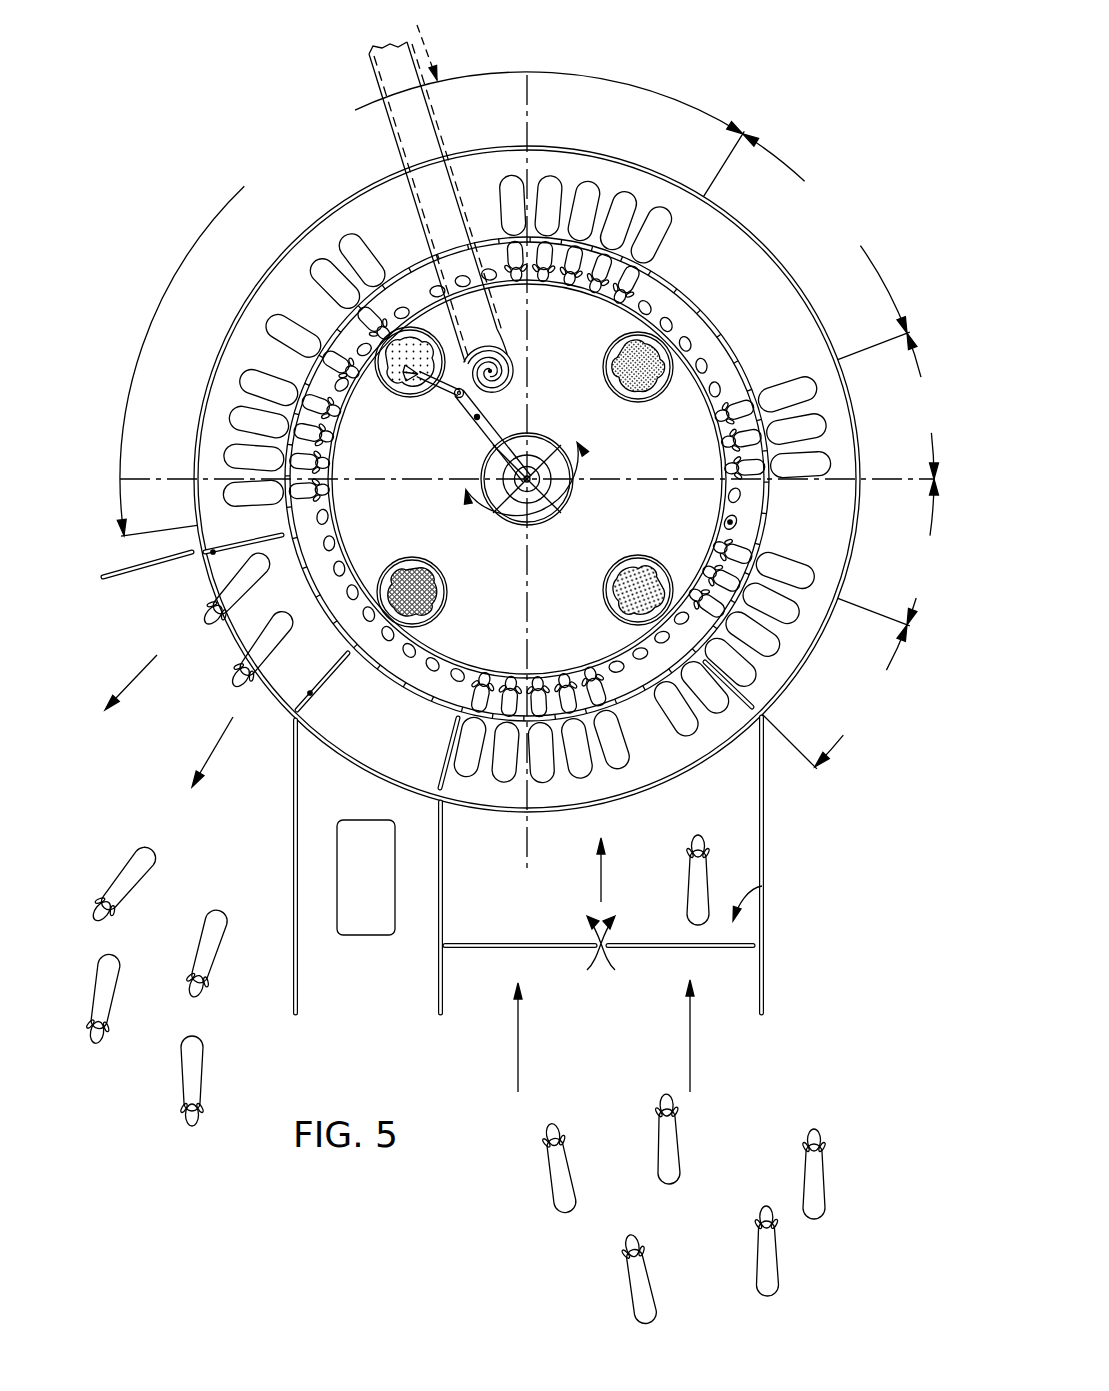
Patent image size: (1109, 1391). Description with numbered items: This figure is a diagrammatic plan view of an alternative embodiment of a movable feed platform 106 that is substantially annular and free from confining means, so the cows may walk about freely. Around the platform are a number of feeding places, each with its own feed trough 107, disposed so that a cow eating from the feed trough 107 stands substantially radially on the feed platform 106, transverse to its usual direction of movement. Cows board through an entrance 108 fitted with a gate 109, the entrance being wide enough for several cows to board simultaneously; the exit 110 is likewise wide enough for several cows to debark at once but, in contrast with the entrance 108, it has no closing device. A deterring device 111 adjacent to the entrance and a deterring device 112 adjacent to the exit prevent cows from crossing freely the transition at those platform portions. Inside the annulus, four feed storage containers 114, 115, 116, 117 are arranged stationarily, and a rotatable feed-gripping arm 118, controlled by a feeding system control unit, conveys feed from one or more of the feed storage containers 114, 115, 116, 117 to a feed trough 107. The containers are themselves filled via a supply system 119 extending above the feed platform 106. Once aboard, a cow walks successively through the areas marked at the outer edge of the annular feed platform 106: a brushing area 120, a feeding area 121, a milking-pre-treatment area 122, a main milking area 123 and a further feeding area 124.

The feed platform 106 is at (548, 155).
The feed trough 107 is at (723, 522).
The entrance 108 is at (762, 886).
The gate 109 is at (724, 948).
The exit 110 is at (192, 752).
The deterring device 111 is at (443, 790).
The deterring device 112 is at (213, 552).
The feed storage container 114 is at (445, 592).
The feed storage container 115 is at (608, 604).
The feed storage container 116 is at (667, 387).
The feed storage container 117 is at (408, 398).
The feed-gripping arm 118 is at (477, 417).
The supply system 119 is at (374, 70).
The brushing area 120 is at (835, 697).
The feeding area 121 is at (898, 552).
The milking-pre-treatment area 122 is at (929, 406).
The main milking area 123 is at (826, 247).
The feeding area 124 is at (430, 304).